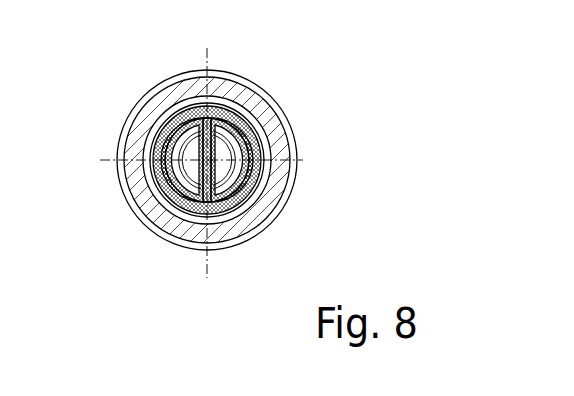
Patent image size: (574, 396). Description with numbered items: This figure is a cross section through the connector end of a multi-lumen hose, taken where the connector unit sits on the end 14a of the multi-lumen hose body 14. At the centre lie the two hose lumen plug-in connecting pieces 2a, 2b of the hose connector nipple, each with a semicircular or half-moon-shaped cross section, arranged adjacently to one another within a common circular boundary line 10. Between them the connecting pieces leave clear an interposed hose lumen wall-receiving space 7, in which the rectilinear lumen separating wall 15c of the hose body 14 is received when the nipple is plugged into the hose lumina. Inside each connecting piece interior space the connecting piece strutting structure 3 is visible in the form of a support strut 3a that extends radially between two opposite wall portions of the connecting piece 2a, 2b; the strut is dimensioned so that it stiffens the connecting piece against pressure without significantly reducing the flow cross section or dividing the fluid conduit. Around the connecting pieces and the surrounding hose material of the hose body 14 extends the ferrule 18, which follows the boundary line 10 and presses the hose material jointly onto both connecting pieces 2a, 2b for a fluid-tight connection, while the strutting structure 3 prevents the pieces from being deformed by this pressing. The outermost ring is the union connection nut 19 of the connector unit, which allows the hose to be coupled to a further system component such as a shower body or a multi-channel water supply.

The union connection nut 19 is at (250, 87).
The ferrule 18 is at (255, 127).
The boundary line 10 is at (262, 147).
The hose lumen plug-in connecting piece 2b is at (260, 172).
The lumen separating wall 15c is at (255, 190).
The multi-lumen hose body 14 is at (278, 192).
The end of the multi-lumen hose body 14a is at (230, 182).
The hose lumen plug-in connecting piece 2a is at (150, 194).
The hose lumen wall-receiving space 7 is at (206, 196).
The connecting piece strutting structure 3 is at (178, 111).
The support strut 3a is at (222, 133).